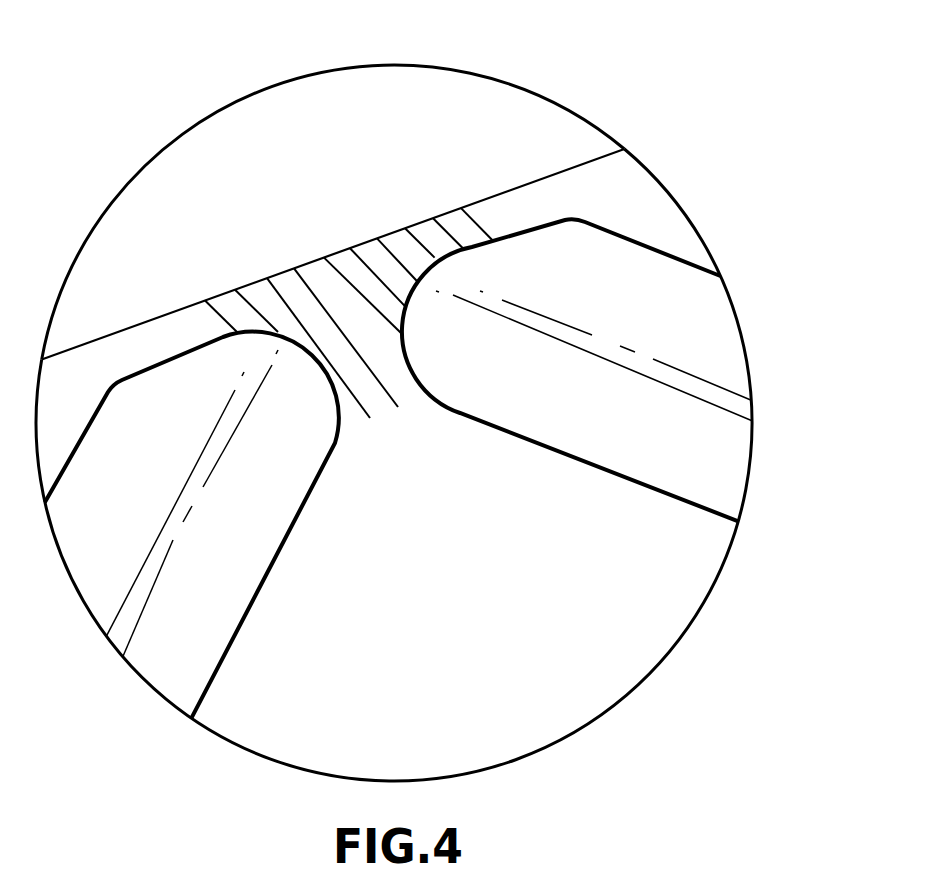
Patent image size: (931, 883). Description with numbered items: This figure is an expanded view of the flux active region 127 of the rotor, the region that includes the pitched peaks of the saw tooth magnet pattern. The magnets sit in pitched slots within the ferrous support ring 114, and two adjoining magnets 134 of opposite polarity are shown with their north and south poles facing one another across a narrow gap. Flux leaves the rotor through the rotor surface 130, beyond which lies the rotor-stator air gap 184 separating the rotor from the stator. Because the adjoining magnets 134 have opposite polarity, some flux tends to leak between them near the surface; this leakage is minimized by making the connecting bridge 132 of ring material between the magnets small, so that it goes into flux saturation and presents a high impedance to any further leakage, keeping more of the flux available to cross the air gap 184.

The ferrous support ring 114 is at (633, 613).
The flux active region 127 is at (708, 113).
The rotor surface 130 is at (277, 273).
The connecting bridge 132 is at (352, 298).
The adjoining magnets 134 is at (455, 362).
The rotor-stator air gap 184 is at (459, 127).